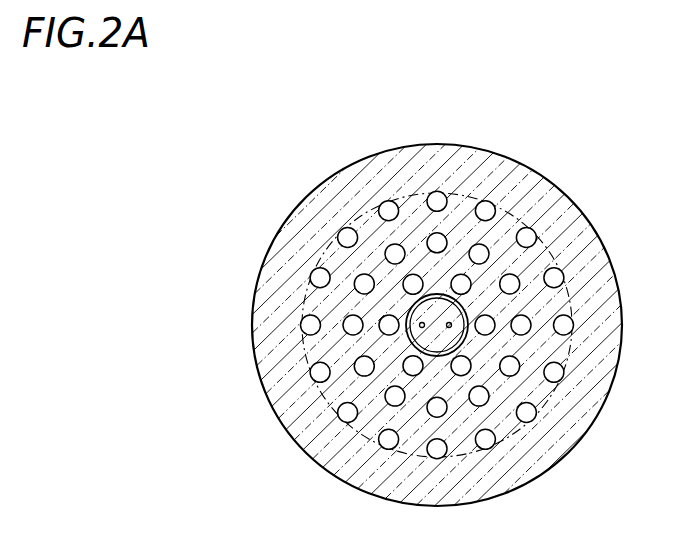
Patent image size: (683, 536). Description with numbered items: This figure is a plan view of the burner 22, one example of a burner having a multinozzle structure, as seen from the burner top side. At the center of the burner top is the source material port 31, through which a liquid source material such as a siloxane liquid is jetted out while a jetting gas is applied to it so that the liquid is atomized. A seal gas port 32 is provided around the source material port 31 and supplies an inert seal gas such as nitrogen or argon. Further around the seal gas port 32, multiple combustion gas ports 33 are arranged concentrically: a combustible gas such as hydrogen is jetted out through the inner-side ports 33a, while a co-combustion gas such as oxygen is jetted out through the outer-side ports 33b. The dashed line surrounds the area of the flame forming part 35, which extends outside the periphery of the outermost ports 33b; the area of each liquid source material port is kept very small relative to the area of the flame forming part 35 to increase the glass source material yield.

The burner 22 is at (404, 292).
The source material port 31 is at (449, 322).
The seal gas port 32 is at (467, 313).
The combustion gas ports 33 is at (367, 324).
The inner-side port 33a is at (404, 280).
The outer-side port 33b is at (300, 325).
The flame forming part 35 is at (350, 218).